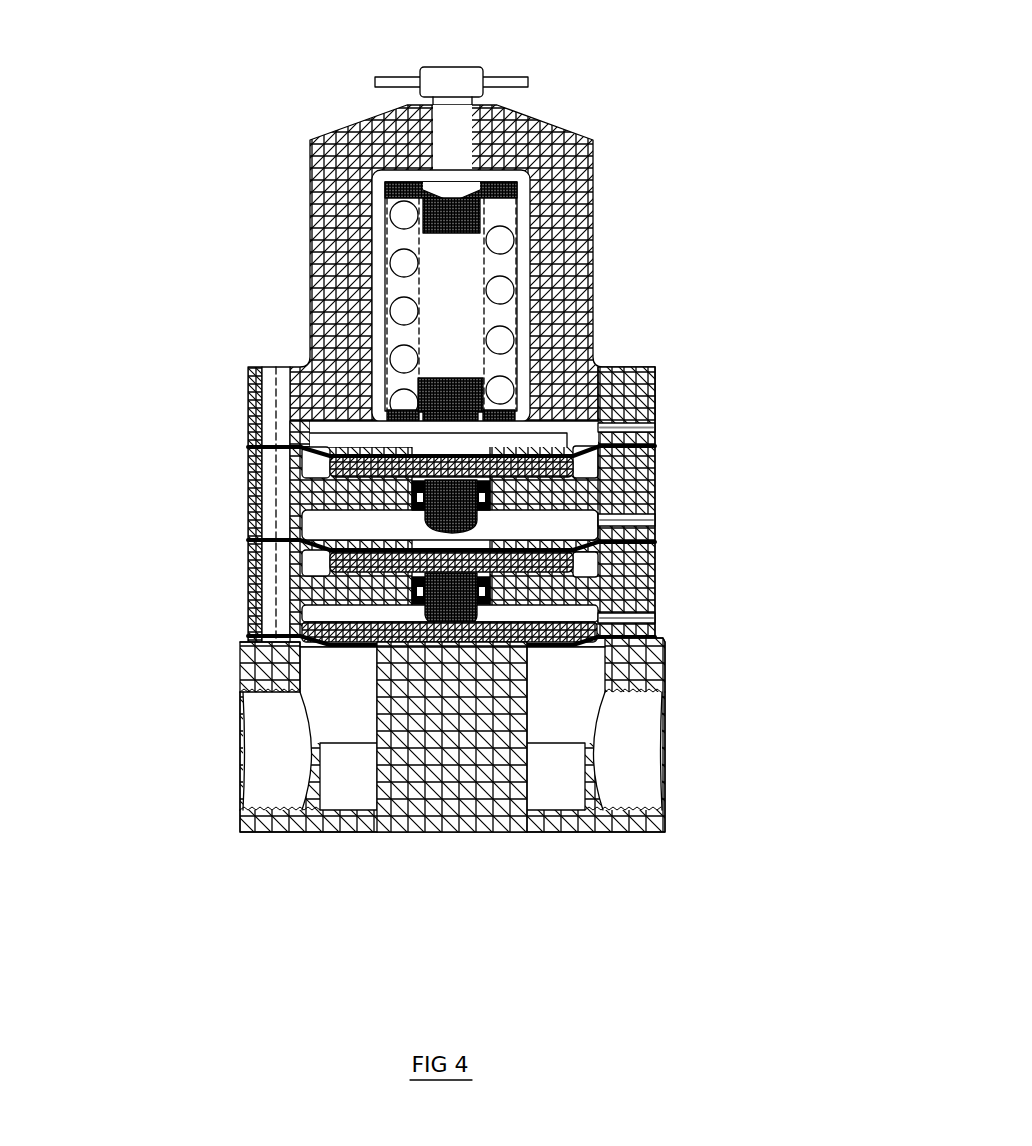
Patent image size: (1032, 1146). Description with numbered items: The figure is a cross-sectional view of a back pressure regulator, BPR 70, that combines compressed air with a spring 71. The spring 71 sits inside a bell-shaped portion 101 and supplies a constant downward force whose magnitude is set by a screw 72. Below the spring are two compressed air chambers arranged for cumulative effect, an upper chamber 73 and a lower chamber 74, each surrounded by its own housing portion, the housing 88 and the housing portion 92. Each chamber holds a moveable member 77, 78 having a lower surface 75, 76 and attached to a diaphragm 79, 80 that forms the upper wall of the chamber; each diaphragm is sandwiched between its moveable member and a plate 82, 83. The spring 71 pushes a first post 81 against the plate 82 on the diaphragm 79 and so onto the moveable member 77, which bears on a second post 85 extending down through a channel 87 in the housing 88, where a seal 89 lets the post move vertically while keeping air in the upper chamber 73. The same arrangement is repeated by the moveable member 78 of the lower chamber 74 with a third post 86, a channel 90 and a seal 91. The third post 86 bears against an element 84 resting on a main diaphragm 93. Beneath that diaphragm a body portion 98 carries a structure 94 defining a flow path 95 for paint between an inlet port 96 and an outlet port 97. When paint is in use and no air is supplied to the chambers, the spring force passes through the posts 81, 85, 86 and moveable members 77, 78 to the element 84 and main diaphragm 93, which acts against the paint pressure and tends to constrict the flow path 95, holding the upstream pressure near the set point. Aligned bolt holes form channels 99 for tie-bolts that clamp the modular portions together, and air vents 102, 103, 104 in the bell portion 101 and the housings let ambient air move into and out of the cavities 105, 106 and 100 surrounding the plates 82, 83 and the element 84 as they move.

The BPR 70 is at (256, 110).
The spring 71 is at (512, 238).
The screw 72 is at (458, 75).
The upper chamber 73 is at (585, 454).
The lower chamber 74 is at (593, 560).
The lower surface 75 is at (563, 480).
The lower surface 76 is at (577, 574).
The moveable member 77 is at (300, 447).
The moveable member 78 is at (302, 540).
The diaphragm 79 is at (255, 430).
The diaphragm 80 is at (325, 520).
The first post 81 is at (467, 388).
The plate 82 is at (547, 434).
The plate 83 is at (660, 524).
The element 84 is at (590, 694).
The second post 85 is at (410, 495).
The third post 86 is at (335, 613).
The channel 87 is at (328, 467).
The housing 88 is at (658, 456).
The seal 89 is at (658, 500).
The channel 90 is at (410, 588).
The seal 91 is at (658, 620).
The housing portion 92 is at (658, 573).
The main diaphragm 93 is at (245, 642).
The structure 94 is at (452, 778).
The flow path 95 is at (642, 777).
The inlet port 96 is at (265, 793).
The outlet port 97 is at (660, 782).
The body portion 98 is at (258, 679).
The channels 99 is at (262, 354).
The cavity 100 is at (246, 626).
The bell-shaped portion 101 is at (537, 132).
The air vent 102 is at (663, 427).
The air vent 103 is at (658, 519).
The air vent 104 is at (566, 637).
The cavity 105 is at (334, 416).
The cavity 106 is at (420, 517).